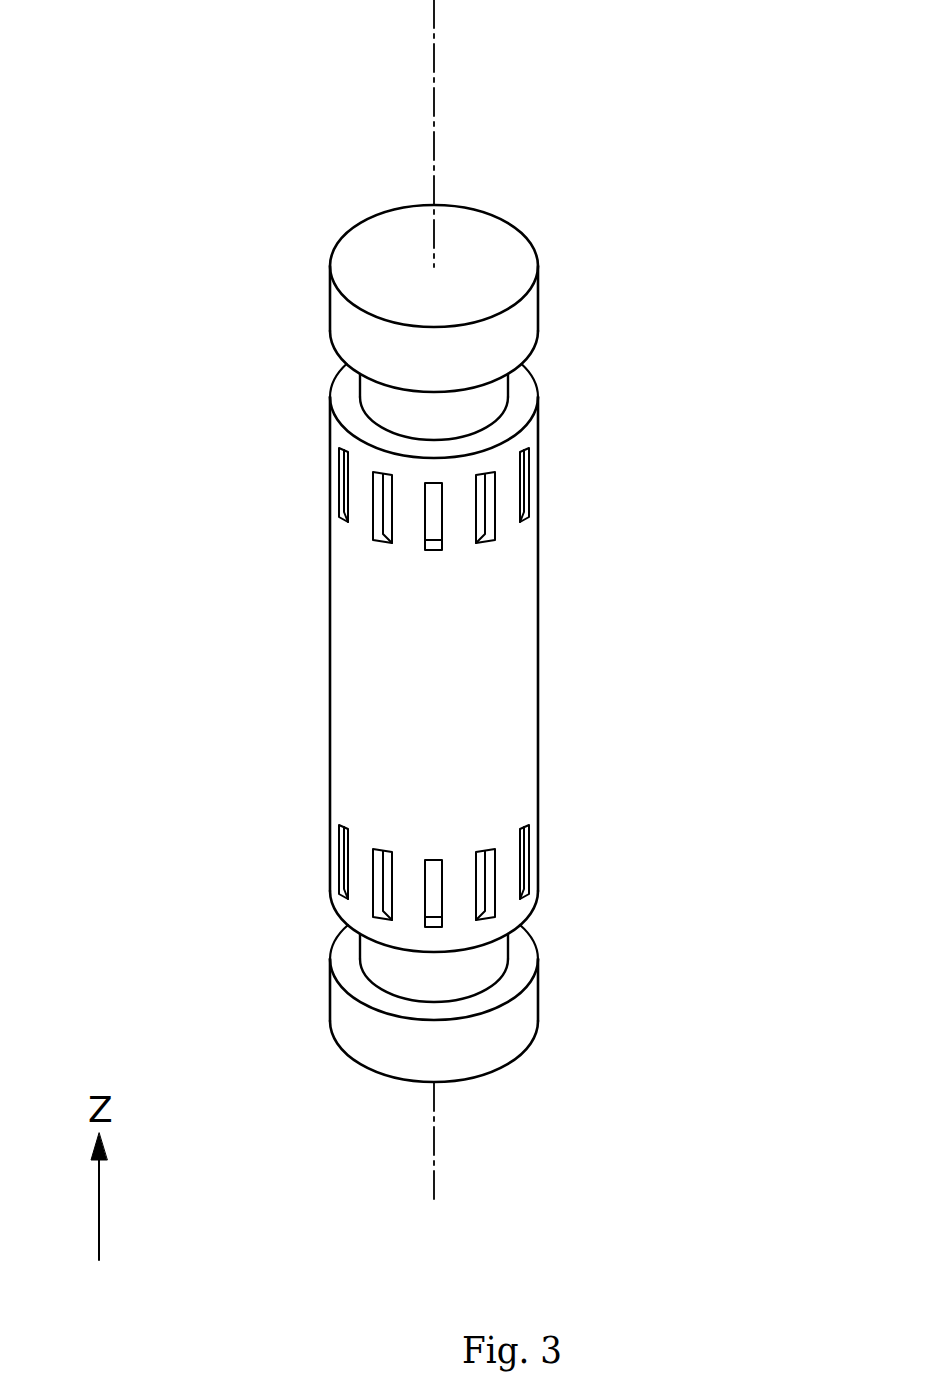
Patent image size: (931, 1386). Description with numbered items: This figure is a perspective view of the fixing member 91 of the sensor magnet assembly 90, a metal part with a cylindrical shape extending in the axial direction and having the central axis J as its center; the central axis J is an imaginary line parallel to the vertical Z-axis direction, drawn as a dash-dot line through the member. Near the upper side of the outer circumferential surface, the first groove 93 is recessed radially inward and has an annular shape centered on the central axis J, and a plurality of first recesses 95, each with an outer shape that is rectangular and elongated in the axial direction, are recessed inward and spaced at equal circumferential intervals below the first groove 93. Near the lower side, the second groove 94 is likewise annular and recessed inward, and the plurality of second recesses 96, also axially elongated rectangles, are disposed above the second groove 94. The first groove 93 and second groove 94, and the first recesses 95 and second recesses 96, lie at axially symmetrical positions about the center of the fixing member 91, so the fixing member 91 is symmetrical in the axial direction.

The sensor magnet assembly 90 is at (647, 144).
The fixing member 91 is at (497, 243).
The first groove 93 is at (523, 392).
The second groove 94 is at (525, 966).
The first recesses 95 is at (430, 518).
The second recesses 96 is at (437, 896).
The central axis J is at (434, 89).